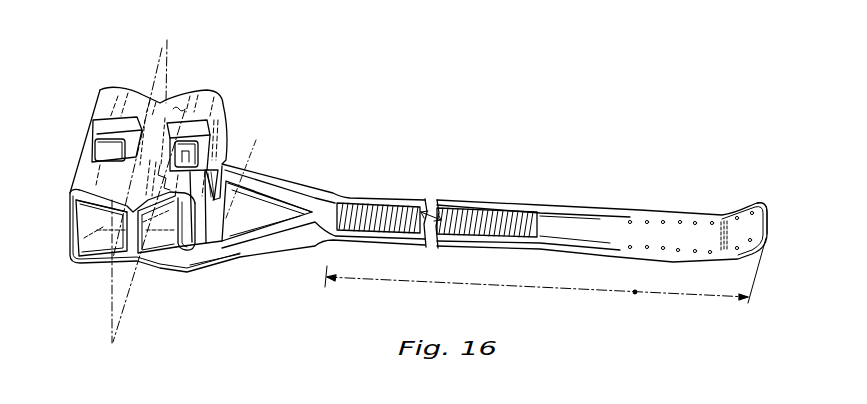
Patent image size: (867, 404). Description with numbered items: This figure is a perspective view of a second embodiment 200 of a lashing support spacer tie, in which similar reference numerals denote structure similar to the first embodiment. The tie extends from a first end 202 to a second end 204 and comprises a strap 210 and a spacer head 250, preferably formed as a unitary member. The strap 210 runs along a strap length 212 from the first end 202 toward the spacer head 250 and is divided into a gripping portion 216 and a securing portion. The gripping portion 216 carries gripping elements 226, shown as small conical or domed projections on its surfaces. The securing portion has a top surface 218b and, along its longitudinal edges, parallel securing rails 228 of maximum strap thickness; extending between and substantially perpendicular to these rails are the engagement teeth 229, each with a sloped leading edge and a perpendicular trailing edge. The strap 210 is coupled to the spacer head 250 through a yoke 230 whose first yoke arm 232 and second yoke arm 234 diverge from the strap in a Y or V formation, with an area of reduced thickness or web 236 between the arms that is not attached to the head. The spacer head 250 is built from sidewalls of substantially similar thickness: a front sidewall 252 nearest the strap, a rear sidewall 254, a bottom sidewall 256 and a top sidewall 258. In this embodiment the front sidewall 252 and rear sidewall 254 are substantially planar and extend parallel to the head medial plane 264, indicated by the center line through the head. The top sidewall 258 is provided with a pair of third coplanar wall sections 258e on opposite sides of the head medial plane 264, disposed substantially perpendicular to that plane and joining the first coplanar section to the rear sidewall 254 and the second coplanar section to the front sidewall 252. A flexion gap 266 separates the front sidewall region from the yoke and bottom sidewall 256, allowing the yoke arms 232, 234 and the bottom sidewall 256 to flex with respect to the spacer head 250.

The second embodiment of a bundle tie 200 is at (458, 140).
The first end 202 is at (752, 210).
The second end 204 is at (70, 243).
The strap 210 is at (533, 261).
The strap length 212 is at (635, 293).
The gripping portion 216 is at (687, 233).
The top surface of securing portion 218b is at (557, 220).
The gripping elements 226 is at (737, 218).
The securing rails 228 is at (388, 203).
The engagement teeth 229 is at (492, 207).
The yoke 230 is at (304, 175).
The first yoke arm 232 is at (258, 242).
The second yoke arm 234 is at (238, 176).
The web 236 is at (265, 203).
The spacer head 250 is at (91, 104).
The front sidewall 252 is at (217, 136).
The rear sidewall 254 is at (73, 217).
The bottom sidewall 256 is at (170, 266).
The top sidewall 258 is at (180, 106).
The third coplanar wall sections 258e is at (199, 106).
The head medial plane 264 is at (110, 295).
The flexion gap 266 is at (199, 250).